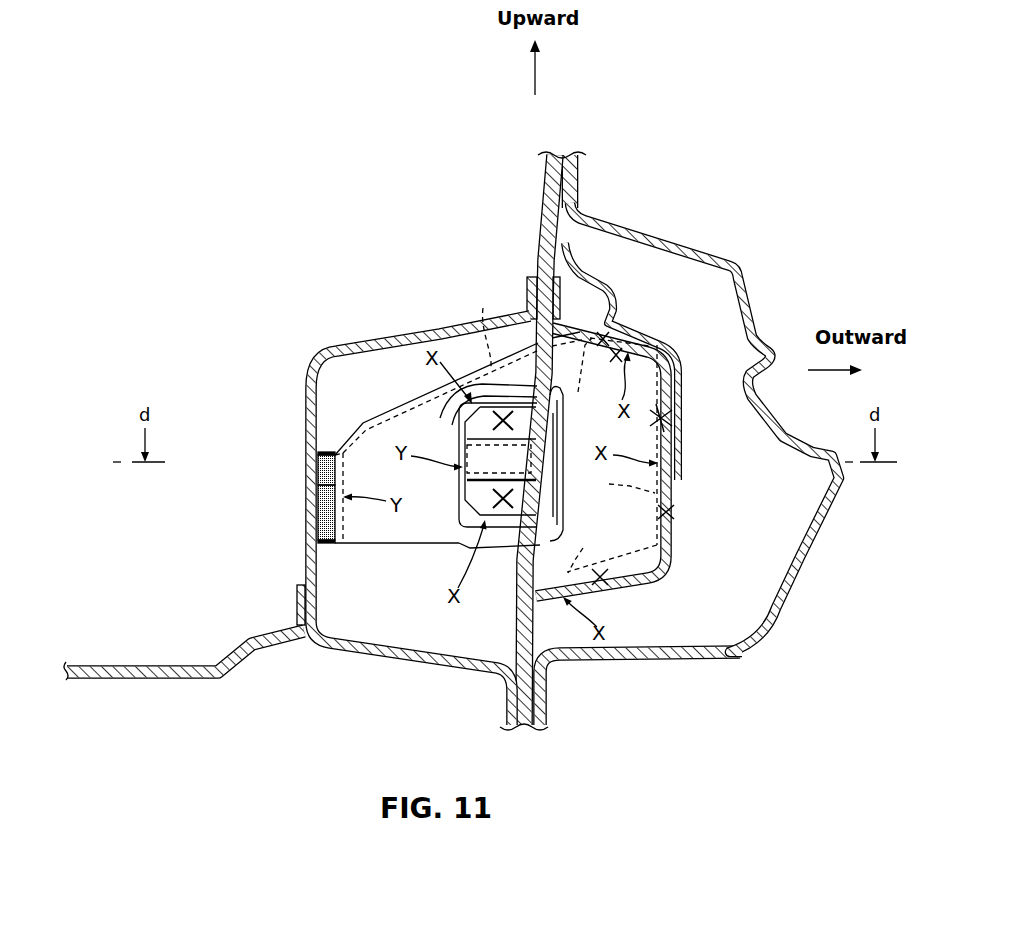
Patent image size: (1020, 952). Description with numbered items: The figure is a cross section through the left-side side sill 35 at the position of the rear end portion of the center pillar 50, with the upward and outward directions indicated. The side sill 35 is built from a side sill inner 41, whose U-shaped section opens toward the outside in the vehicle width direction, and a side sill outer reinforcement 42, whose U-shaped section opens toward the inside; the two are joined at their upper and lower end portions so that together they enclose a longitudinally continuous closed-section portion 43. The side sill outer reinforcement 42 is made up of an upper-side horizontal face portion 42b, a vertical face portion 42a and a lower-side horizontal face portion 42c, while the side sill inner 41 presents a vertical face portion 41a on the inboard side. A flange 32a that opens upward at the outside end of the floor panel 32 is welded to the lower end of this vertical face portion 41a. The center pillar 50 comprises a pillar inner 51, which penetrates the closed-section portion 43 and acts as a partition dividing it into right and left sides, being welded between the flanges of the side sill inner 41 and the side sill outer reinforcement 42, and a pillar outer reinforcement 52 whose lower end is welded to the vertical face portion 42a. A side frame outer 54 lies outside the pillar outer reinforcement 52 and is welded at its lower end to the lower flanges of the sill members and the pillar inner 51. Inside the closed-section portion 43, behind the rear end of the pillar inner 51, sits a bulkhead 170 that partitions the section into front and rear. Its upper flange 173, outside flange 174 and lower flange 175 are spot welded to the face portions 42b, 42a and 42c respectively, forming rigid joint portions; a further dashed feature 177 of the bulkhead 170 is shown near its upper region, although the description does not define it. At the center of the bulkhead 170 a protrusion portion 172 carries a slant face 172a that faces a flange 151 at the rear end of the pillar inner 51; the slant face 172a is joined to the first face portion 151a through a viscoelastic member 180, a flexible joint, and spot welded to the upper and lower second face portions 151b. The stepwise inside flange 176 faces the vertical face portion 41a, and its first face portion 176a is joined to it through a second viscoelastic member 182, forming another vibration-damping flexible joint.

The floor panel 32 is at (138, 678).
The flange 32a is at (297, 605).
The side sill 35 is at (372, 278).
The side sill inner 41 is at (345, 343).
The vertical face portion 41a is at (306, 421).
The side sill outer reinforcement 42 is at (676, 565).
The vertical face portion 42a is at (672, 510).
The upper-side horizontal face portion 42b is at (590, 322).
The lower-side horizontal face portion 42c is at (628, 578).
The closed-section portion 43 is at (462, 355).
The center pillar 50 is at (570, 237).
The pillar inner 51 is at (545, 240).
The pillar outer reinforcement 52 is at (576, 257).
The side frame outer 54 is at (705, 248).
The flange 151 is at (519, 512).
The first face portion 151a is at (465, 478).
The second face portions 151b is at (466, 406).
The bulkhead 170 is at (418, 578).
The protrusion portion 172 is at (572, 508).
The slant face 172a is at (462, 523).
The upper flange 173 is at (612, 455).
The outside flange 174 is at (614, 483).
The lower flange 175 is at (588, 550).
The inside flange 176 is at (349, 527).
The first face portion 176a is at (316, 470).
The reinforcement flange 177 is at (482, 324).
The viscoelastic member 180 is at (467, 450).
The viscoelastic member 182 is at (316, 528).